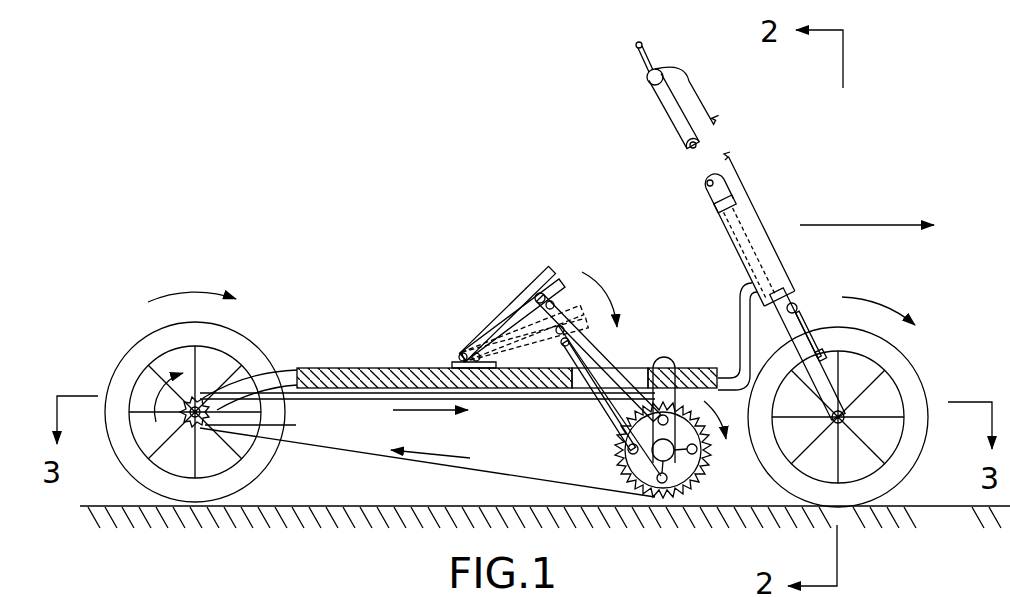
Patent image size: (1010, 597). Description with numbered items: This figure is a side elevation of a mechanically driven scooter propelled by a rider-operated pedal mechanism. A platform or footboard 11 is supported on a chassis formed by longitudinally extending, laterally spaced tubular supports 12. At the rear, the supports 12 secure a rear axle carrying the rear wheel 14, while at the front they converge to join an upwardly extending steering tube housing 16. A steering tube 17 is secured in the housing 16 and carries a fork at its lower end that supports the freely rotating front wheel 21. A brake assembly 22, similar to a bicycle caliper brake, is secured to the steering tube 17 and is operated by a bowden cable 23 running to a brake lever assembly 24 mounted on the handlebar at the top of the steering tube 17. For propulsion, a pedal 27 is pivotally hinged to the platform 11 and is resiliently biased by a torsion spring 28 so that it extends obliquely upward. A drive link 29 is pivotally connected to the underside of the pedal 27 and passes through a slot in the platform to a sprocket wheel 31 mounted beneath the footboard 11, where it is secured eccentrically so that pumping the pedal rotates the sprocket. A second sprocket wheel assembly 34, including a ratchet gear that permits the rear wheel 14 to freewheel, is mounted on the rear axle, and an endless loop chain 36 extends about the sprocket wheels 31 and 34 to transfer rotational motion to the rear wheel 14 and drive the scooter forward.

The platform 11 is at (376, 368).
The tubular supports 12 is at (288, 363).
The rear wheel 14 is at (140, 343).
The steering tube housing 16 is at (750, 195).
The steering tube 17 is at (668, 118).
The front wheel 21 is at (921, 372).
The brake assembly 22 is at (800, 325).
The bowden cable 23 is at (694, 86).
The brake lever assembly 24 is at (646, 46).
The pedal 27 is at (522, 297).
The torsion spring 28 is at (490, 368).
The drive link 29 is at (597, 340).
The sprocket wheel 31 is at (614, 452).
The sprocket wheel assembly 34 is at (427, 415).
The endless loop chain 36 is at (383, 458).